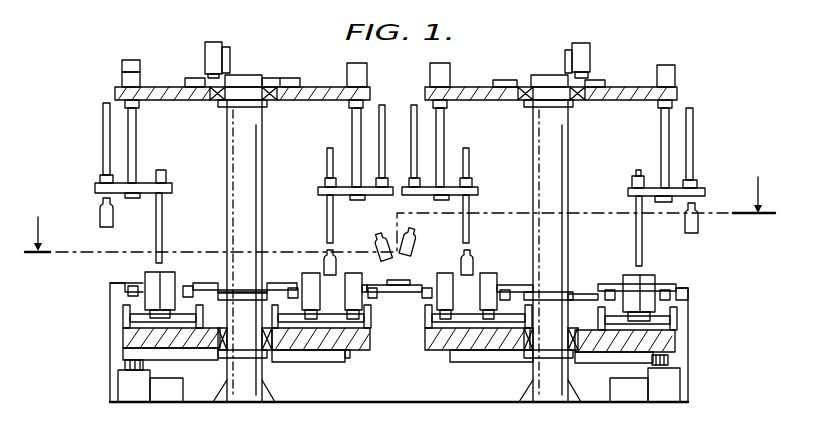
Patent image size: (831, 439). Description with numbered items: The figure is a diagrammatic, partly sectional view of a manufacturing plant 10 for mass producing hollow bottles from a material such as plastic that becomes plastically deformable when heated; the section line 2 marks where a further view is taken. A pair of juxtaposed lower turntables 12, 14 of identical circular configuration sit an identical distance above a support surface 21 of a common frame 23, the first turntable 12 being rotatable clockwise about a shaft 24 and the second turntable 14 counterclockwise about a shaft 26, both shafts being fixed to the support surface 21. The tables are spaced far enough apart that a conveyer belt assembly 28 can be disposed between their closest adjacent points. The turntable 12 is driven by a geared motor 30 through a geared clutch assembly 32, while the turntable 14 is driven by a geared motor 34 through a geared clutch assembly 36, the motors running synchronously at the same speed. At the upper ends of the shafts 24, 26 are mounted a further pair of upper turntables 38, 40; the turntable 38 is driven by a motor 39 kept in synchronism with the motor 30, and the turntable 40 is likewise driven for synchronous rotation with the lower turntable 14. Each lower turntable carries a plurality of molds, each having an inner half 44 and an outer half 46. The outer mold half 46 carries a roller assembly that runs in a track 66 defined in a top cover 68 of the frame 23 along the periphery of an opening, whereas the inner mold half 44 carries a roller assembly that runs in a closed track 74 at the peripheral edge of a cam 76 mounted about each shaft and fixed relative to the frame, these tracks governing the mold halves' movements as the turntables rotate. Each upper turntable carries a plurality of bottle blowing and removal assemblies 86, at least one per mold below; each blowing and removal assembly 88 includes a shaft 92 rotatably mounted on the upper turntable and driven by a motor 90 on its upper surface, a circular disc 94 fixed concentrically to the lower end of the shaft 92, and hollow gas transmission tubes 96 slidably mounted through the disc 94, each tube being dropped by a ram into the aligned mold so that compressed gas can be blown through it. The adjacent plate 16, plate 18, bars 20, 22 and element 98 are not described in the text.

The manufacturing plant 10 is at (620, 52).
The section line 2- 2 is at (396, 214).
The turntable 12 is at (132, 336).
The turntable 14 is at (668, 343).
The second turntable plate 16 is at (292, 328).
The third turntable plate 18 is at (507, 333).
The support bar under plate 16 20 is at (305, 355).
The support surface 21 is at (415, 403).
The support bar under plate 18 22 is at (474, 354).
The frame 23 is at (358, 384).
The shaft 24 is at (263, 182).
The shaft 26 is at (570, 235).
The conveyer belt assembly 28 is at (404, 293).
The geared motor 30 is at (128, 377).
The geared clutch assembly 32 is at (180, 358).
The geared motor 34 is at (668, 383).
The geared clutch assembly 36 is at (600, 362).
The turntable 38 is at (319, 86).
The motor 39 is at (577, 50).
The turntable 40 is at (474, 87).
The inner mold half 44 is at (304, 272).
The outer mold half 46 is at (357, 263).
The track 66 is at (133, 284).
The top cover 68 is at (110, 284).
The closed track 74 is at (212, 284).
The cam 76 is at (218, 286).
The bottle blowing and removal assembly 86 is at (91, 145).
The blowing and removal assembly 88 is at (116, 70).
The motor 90 is at (134, 60).
The shaft 92 is at (137, 125).
The circular disc 94 is at (112, 208).
The hollow gas transmission tube 96 is at (102, 115).
The spindle plate 98 is at (99, 183).